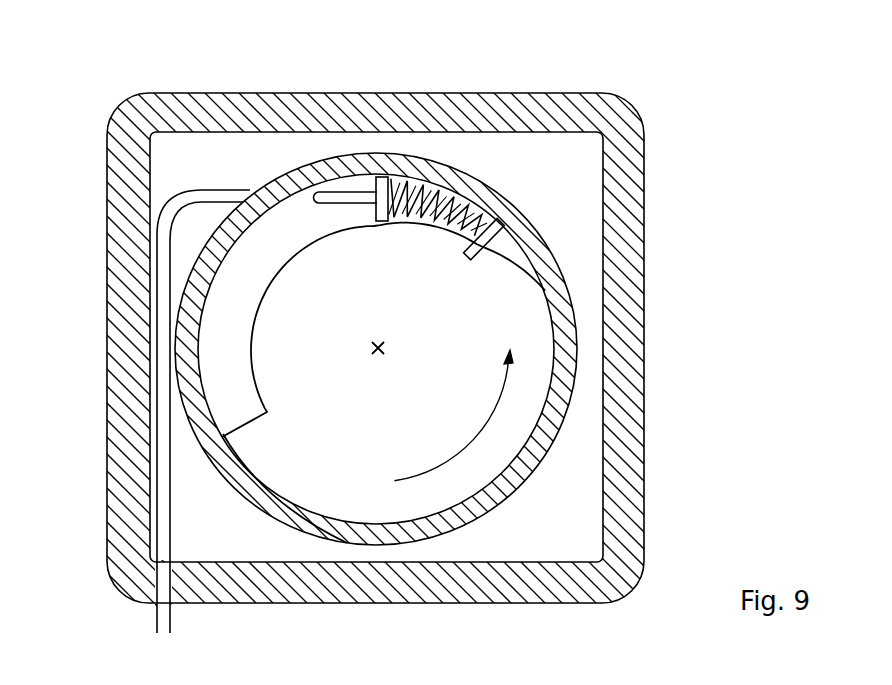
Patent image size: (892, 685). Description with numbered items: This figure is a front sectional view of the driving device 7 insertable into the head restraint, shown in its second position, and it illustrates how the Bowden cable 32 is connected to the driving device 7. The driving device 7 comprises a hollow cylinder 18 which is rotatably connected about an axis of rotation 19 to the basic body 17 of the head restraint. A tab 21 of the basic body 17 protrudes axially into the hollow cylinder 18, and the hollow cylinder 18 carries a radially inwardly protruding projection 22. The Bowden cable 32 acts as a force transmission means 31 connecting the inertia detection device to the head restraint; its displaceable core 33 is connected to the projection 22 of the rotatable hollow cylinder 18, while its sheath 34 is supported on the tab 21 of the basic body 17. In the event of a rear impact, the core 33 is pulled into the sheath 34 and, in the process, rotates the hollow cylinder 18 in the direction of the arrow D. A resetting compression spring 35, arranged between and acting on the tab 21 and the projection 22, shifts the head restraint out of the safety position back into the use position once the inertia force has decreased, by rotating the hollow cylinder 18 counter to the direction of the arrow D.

The driving device 7 is at (687, 142).
The basic body 17 is at (630, 404).
The hollow cylinder 18 is at (564, 331).
The axis of rotation 19 is at (378, 357).
The tab 21 is at (360, 172).
The projection 22 is at (490, 262).
The force transmission means 31 is at (160, 613).
The Bowden cable 32 is at (165, 398).
The core 33 is at (430, 190).
The sheath 34 is at (328, 192).
The resetting compression spring 35 is at (470, 198).